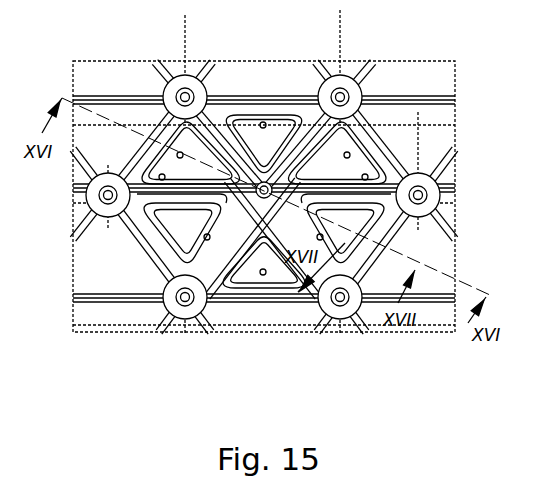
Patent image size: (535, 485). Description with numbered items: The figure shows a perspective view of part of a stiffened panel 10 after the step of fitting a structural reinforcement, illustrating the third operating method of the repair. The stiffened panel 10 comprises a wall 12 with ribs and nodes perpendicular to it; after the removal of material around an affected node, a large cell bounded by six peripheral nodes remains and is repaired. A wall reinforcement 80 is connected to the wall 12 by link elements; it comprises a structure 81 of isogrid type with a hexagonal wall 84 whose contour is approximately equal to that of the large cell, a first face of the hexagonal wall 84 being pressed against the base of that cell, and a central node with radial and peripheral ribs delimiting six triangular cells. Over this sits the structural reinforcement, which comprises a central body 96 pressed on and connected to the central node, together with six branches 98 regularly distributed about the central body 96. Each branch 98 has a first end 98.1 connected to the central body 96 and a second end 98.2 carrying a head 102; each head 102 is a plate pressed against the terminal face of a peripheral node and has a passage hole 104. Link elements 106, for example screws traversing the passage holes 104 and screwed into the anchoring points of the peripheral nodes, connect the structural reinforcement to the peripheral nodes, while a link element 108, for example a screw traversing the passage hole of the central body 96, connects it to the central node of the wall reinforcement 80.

The stiffened panel 10 is at (93, 57).
The wall 12 is at (437, 122).
The wall reinforcement 80 is at (153, 222).
The structure of isogrid type 81 is at (251, 110).
The hexagonal wall 84 is at (244, 290).
The central body 96 is at (267, 152).
The branch 98 is at (193, 170).
The first end 98.1 is at (155, 222).
The second end 98.2 is at (135, 222).
The head 102 is at (88, 222).
The passage hole 104 is at (86, 192).
The link element 106 is at (185, 24).
The link element 108 is at (452, 257).